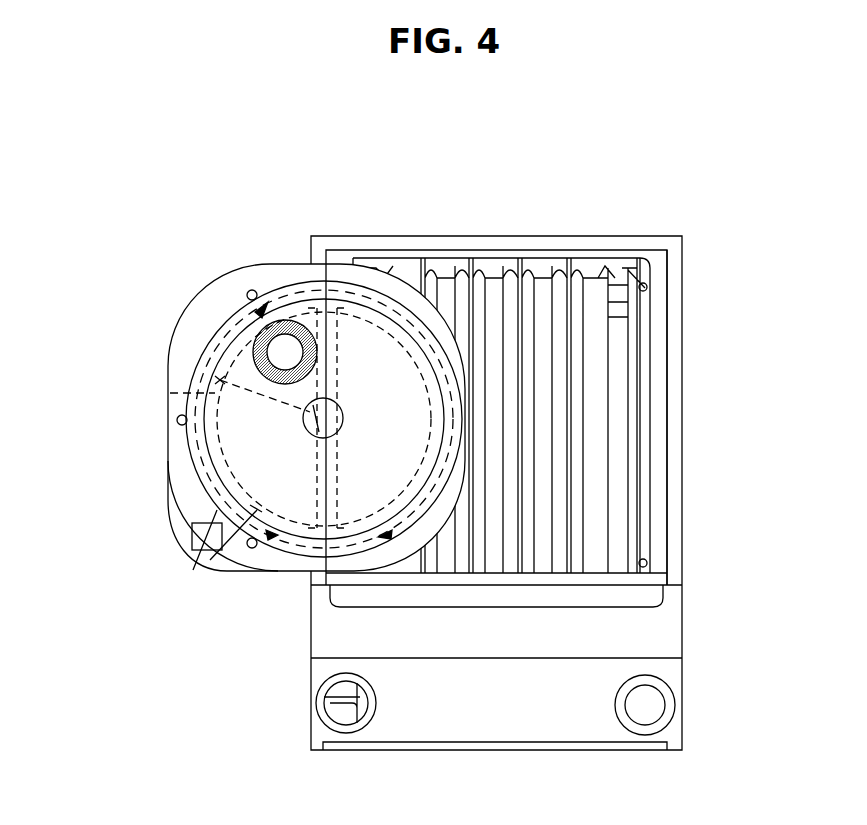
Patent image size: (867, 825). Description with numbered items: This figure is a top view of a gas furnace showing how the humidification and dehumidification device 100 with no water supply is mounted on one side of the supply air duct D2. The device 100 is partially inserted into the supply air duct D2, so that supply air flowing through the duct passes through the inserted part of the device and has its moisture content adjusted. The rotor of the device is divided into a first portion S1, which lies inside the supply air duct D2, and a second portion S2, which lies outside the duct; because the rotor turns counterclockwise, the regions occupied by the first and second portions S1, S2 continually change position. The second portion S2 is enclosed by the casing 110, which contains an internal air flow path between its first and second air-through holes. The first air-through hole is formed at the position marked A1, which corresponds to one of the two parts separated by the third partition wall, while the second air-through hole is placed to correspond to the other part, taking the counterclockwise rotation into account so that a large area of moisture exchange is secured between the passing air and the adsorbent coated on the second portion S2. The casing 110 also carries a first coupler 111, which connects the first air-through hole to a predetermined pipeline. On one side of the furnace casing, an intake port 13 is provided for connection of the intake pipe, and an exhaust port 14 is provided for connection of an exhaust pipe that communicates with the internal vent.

The humidification and dehumidification device with no water supply 100 is at (158, 461).
The casing 110 is at (168, 513).
The first coupler 111 is at (253, 340).
The position of the first air-through hole A1 is at (170, 393).
The first portion S1 is at (437, 268).
The second portion S2 is at (203, 563).
The supply air duct D2 is at (660, 561).
The intake port 13 is at (316, 712).
The exhaust port 14 is at (660, 700).